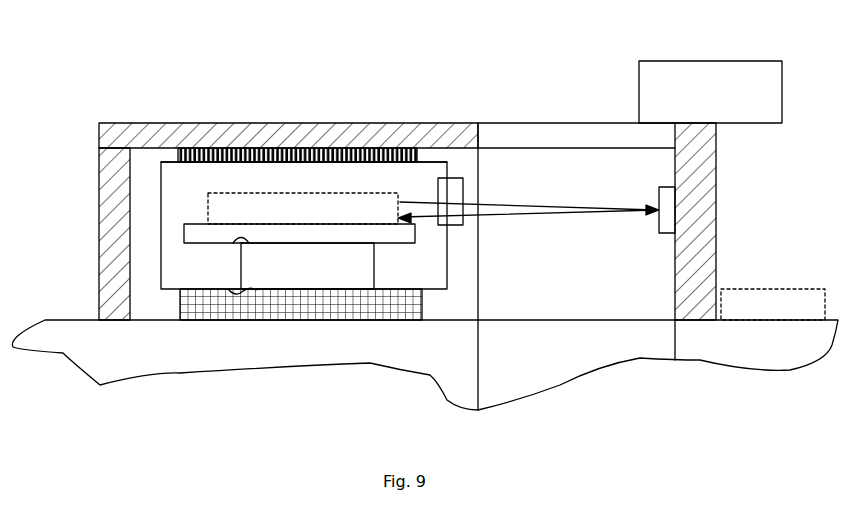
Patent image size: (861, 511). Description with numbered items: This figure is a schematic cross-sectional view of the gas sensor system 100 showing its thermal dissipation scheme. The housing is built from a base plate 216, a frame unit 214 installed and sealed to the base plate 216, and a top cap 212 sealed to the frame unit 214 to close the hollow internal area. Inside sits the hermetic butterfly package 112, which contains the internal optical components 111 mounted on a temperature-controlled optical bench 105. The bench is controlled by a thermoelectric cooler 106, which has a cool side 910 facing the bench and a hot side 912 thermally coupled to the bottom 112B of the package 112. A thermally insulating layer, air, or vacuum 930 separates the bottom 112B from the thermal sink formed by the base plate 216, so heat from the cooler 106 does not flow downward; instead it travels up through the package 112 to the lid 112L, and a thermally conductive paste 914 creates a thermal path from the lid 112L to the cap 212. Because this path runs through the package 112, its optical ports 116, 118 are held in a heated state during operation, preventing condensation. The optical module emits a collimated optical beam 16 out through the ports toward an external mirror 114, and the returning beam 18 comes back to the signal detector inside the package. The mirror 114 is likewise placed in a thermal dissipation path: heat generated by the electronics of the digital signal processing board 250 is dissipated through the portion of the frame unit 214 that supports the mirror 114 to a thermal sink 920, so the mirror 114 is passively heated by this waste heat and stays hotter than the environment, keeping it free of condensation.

The gas sensor system 100 is at (367, 76).
The top cap 212 is at (99, 140).
The frame unit 214 is at (99, 192).
The base plate 216 is at (85, 318).
The hermetic package 112 is at (161, 218).
The lid 112L is at (273, 120).
The bottom 112B is at (280, 353).
The thermally conductive paste 914 is at (296, 152).
The thermally insulating layer 930 is at (302, 295).
The internal optical components 111 is at (303, 208).
The optical bench 105 is at (394, 245).
The thermoelectric cooler 106 is at (307, 266).
The cool side 910 is at (234, 243).
The hot side 912 is at (241, 293).
The optical port 116 is at (509, 161).
The optical port 118 is at (463, 180).
The mirror 114 is at (659, 196).
The returning beam 18 is at (532, 204).
The collimated optical beam output 16 is at (532, 219).
The thermal sink 920 is at (710, 92).
The digital signal processing electronics board 250 is at (773, 304).